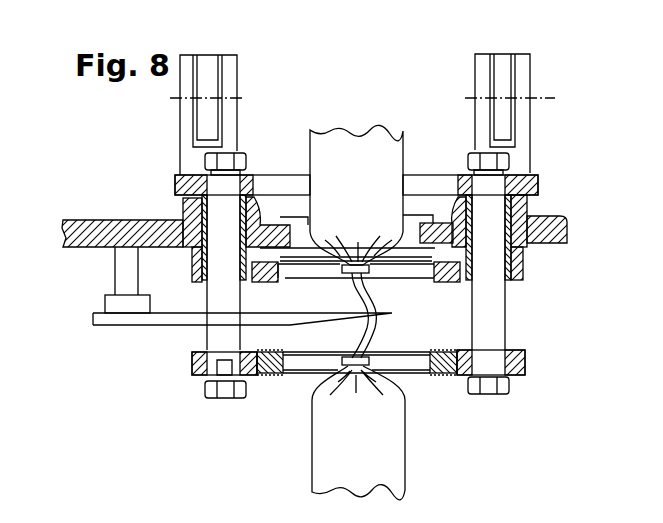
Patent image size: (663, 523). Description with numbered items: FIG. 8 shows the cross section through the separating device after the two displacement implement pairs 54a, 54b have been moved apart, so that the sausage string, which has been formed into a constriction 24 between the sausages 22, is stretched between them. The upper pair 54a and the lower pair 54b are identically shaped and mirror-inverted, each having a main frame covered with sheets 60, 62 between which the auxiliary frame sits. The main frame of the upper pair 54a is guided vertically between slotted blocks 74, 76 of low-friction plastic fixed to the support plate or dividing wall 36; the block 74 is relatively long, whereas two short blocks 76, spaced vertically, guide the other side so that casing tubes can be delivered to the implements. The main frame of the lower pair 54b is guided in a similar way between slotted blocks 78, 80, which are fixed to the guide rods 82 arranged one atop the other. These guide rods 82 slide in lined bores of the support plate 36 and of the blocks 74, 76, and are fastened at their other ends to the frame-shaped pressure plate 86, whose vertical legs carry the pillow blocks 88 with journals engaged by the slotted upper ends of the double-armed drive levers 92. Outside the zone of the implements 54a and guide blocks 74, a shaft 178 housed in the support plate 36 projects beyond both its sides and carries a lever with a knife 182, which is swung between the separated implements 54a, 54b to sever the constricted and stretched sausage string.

The sausages 22 is at (322, 444).
The constrictions 24 is at (370, 292).
The support plate 36 is at (84, 231).
The displacement implement pair 54a is at (437, 248).
The displacement implement pair 54b is at (445, 375).
The sheet 60 is at (407, 373).
The sheet 62 is at (418, 352).
The slotted block 74 is at (193, 265).
The slotted block 76 is at (522, 263).
The slotted block 78 is at (200, 366).
The slotted block 80 is at (522, 110).
The guide rods 82 is at (212, 301).
The pressure plate 86 is at (539, 184).
The pillow blocks 88 is at (182, 130).
The double-armed drive levers 92 is at (208, 62).
The shaft 178 is at (120, 277).
The knife 182 is at (320, 312).